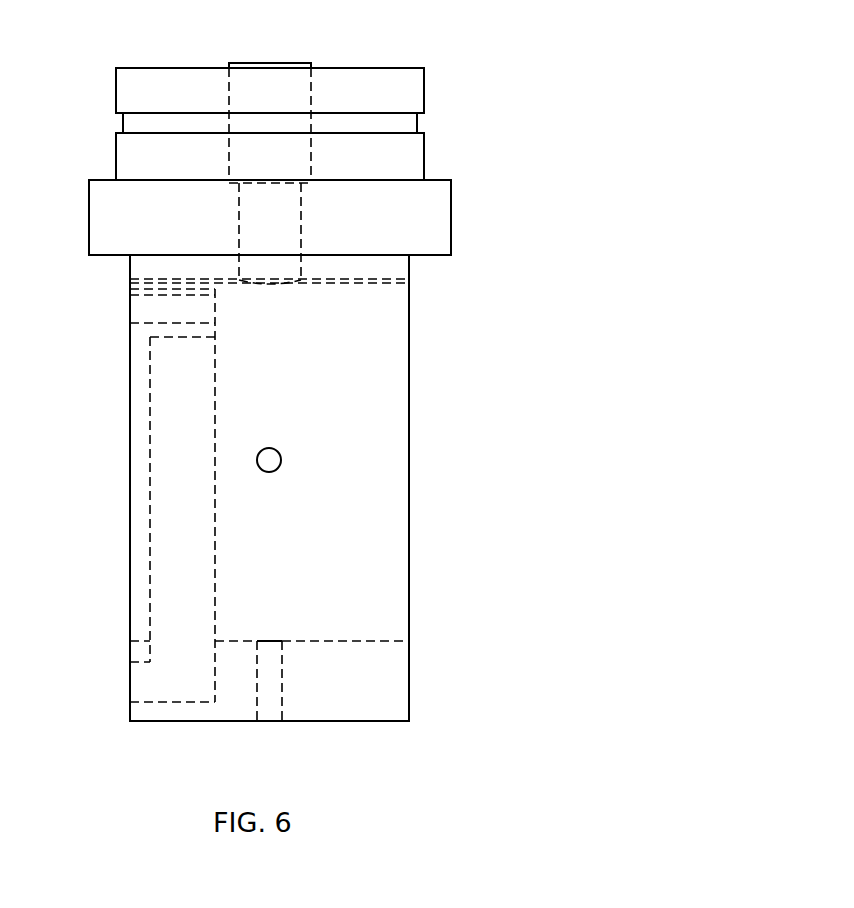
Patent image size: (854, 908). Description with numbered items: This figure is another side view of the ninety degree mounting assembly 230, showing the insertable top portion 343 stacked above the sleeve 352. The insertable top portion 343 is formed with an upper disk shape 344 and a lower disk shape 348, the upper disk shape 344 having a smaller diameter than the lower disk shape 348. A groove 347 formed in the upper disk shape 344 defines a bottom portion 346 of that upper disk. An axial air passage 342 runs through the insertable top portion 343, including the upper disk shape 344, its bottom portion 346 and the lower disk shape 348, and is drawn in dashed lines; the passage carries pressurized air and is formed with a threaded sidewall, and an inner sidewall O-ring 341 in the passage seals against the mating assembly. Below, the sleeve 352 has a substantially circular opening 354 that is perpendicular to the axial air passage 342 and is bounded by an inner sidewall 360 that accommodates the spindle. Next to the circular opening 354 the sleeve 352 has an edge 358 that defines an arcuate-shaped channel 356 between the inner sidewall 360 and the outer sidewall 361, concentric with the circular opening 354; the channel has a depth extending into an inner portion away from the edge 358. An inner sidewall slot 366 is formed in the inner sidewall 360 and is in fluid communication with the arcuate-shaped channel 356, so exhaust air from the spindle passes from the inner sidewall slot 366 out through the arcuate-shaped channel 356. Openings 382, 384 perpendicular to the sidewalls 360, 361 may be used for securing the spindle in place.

The ninety degree mounting assembly 230 is at (533, 532).
The inner sidewall O-ring 341 is at (235, 70).
The axial air passage 342 is at (268, 66).
The insertable top portion 343 is at (395, 67).
The upper disk shape 344 is at (424, 93).
The bottom portion of the upper disk shape 346 is at (424, 160).
The groove 347 is at (123, 128).
The lower disk shape 348 is at (89, 220).
The sleeve 352 is at (401, 384).
The circular opening 354 is at (130, 500).
The arcuate-shaped channel 356 is at (142, 682).
The edge 358 is at (130, 338).
The inner sidewall 360 is at (370, 285).
The outer sidewall 361 is at (170, 721).
The inner sidewall slot 366 is at (160, 602).
The opening 382 is at (272, 721).
The opening 384 is at (281, 462).